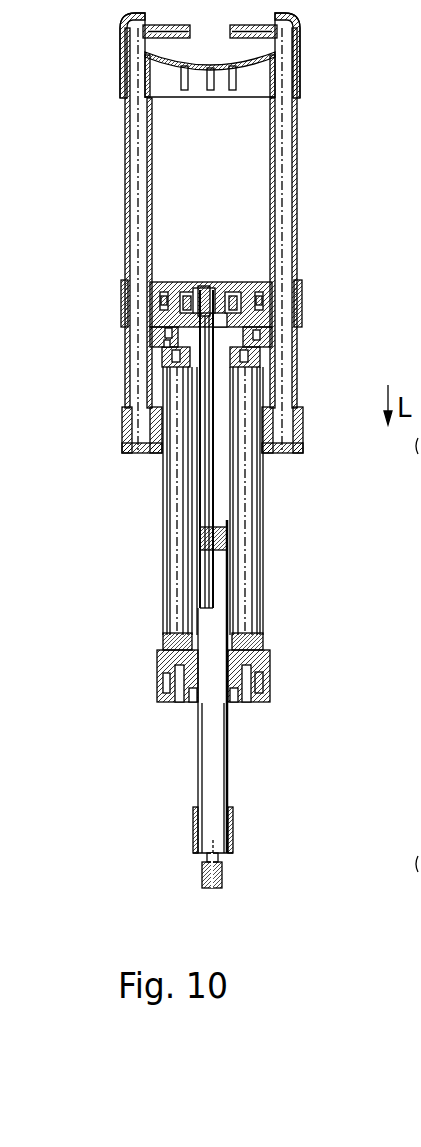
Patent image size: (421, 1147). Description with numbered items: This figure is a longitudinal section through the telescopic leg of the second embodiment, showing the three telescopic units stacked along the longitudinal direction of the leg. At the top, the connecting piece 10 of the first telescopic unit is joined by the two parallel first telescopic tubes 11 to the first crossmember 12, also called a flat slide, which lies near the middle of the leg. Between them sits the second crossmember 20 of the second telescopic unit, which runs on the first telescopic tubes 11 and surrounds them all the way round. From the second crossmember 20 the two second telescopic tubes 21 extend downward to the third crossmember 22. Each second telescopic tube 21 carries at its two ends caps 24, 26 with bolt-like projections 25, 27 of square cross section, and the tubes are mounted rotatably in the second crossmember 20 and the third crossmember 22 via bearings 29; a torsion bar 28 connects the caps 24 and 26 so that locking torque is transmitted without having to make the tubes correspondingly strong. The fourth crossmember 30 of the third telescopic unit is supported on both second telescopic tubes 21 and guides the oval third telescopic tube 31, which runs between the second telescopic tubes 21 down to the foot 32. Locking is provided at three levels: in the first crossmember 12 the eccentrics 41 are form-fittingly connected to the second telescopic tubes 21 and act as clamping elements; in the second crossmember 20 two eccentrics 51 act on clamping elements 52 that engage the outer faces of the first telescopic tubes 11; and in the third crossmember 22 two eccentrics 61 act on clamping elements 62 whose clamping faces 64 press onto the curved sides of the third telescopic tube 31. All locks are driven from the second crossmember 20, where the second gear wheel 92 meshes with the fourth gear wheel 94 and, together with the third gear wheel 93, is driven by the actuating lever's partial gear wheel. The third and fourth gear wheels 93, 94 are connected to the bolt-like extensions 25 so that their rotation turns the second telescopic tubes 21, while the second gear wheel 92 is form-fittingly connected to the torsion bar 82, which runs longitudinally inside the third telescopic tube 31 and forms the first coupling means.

The connecting piece 10 is at (287, 50).
The first telescopic tubes 11 is at (287, 150).
The first crossmember 12 is at (305, 443).
The second crossmember 20 is at (420, 320).
The second telescopic tubes 21 is at (163, 520).
The third crossmember 22 is at (270, 687).
The cap 24 is at (162, 345).
The bolt-like projection 25 is at (165, 331).
The cap 26 is at (163, 648).
The bolt-like projection 27 is at (172, 700).
The torsion bar 28 is at (247, 473).
The bearings 29 is at (163, 672).
The fourth crossmember 30 is at (230, 543).
The third telescopic tube 31 is at (228, 765).
The foot 32 is at (232, 853).
The eccentric 41 is at (157, 452).
The eccentrics 51 is at (156, 282).
The clamping elements 52 is at (150, 282).
The eccentrics 61 is at (188, 703).
The clamping elements 62 is at (233, 700).
The clamping faces 64 is at (243, 667).
The torsion bar 82 is at (200, 478).
The second gear wheel 92 is at (220, 282).
The third gear wheel 93 is at (270, 293).
The fourth gear wheel 94 is at (178, 282).